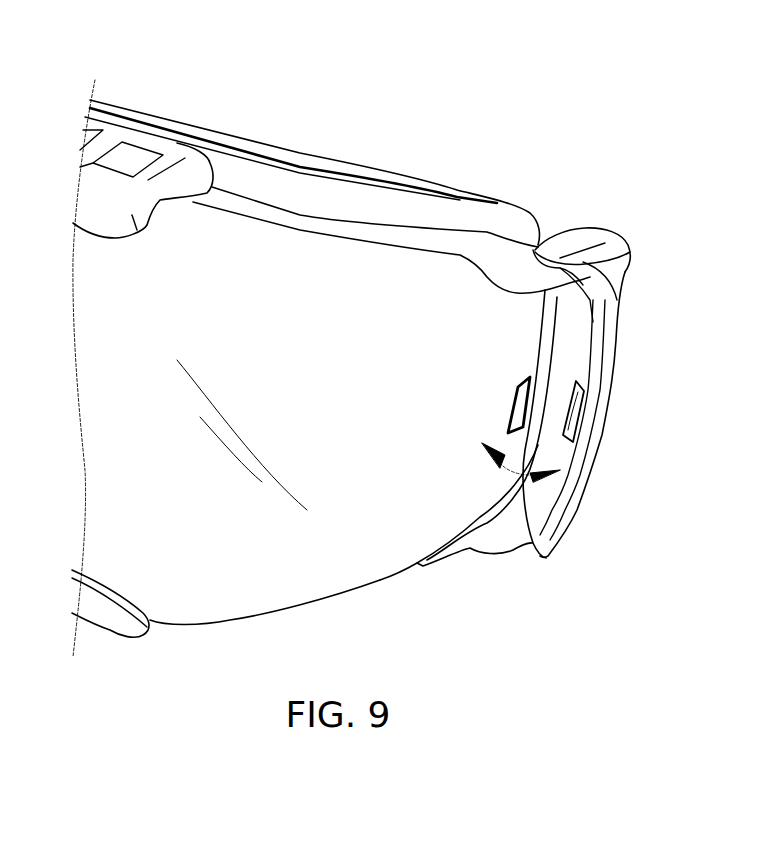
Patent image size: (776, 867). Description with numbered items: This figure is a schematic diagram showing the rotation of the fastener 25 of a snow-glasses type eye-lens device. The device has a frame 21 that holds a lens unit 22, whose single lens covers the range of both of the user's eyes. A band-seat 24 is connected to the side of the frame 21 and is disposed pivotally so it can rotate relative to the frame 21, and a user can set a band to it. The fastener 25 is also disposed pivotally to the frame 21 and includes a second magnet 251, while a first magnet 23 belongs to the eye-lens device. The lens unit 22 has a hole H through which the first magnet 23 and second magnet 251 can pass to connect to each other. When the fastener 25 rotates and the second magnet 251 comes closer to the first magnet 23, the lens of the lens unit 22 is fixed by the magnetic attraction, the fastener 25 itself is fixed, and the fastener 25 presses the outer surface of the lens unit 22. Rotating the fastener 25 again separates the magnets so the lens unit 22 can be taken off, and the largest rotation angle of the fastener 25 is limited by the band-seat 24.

The frame 21 is at (125, 137).
The lens unit 22 is at (323, 583).
The first magnet 23 is at (518, 383).
The band-seat 24 is at (603, 237).
The fastener 25 is at (610, 383).
The second magnet 251 is at (567, 423).
The hole H is at (519, 385).